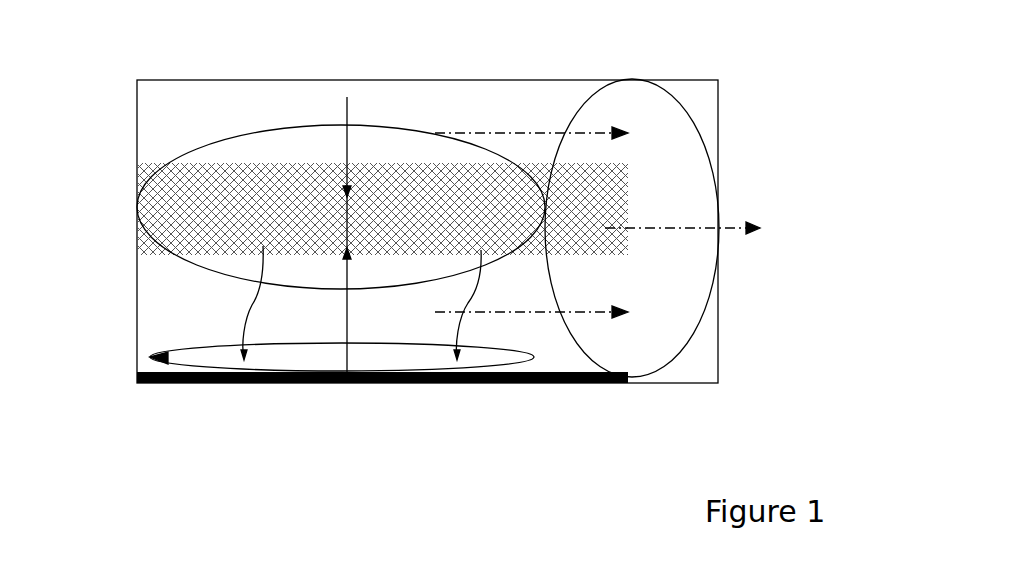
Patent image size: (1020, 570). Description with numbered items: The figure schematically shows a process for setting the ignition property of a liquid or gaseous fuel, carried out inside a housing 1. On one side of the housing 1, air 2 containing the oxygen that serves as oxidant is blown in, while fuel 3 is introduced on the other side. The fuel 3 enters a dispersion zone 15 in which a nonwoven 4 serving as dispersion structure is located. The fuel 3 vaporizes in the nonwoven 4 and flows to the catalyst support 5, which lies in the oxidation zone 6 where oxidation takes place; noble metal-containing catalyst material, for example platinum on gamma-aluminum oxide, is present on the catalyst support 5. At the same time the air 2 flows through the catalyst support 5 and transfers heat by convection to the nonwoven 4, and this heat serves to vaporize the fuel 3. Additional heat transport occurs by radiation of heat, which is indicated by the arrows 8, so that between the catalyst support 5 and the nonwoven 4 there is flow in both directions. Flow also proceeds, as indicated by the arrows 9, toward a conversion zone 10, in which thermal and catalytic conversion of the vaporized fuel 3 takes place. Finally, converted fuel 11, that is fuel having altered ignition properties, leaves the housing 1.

The housing 1 is at (178, 80).
The air 2 is at (347, 97).
The fuel 3 is at (348, 383).
The nonwoven 4 is at (220, 373).
The catalyst support 5 is at (240, 211).
The oxidation zone 6 is at (205, 148).
The arrows 8 is at (480, 297).
The arrows 9 is at (541, 133).
The conversion zone 10 is at (653, 373).
The converted fuel 11 is at (748, 222).
The dispersion zone 15 is at (273, 358).